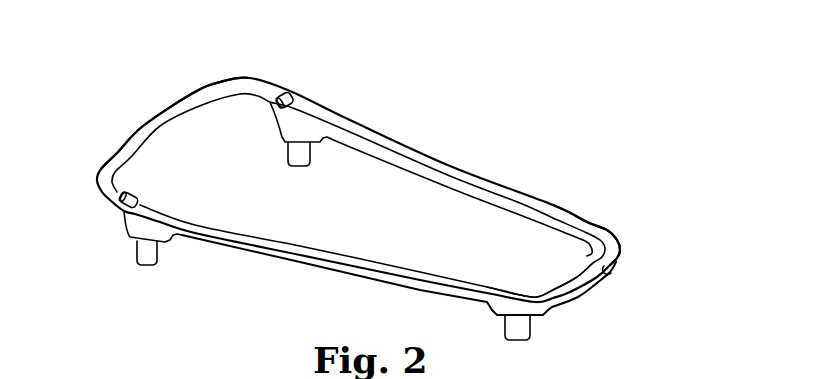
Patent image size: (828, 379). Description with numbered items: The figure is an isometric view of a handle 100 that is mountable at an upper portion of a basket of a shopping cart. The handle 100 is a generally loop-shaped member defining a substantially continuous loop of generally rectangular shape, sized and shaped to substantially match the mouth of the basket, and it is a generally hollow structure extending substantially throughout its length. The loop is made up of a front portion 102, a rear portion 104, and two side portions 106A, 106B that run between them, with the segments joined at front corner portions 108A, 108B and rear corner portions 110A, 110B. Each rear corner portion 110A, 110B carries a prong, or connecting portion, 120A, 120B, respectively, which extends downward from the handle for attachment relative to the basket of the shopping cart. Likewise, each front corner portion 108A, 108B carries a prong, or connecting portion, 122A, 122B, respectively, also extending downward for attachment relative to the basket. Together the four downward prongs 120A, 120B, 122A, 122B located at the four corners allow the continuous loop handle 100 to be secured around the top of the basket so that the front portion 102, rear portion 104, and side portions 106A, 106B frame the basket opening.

The handle 100 is at (530, 164).
The front portion 102 is at (597, 281).
The rear portion 104 is at (156, 117).
The side portion 106A is at (485, 193).
The side portion 106B is at (344, 272).
The front corner portion 108A is at (621, 241).
The front corner portion 108B is at (520, 295).
The rear corner portion 110A is at (312, 119).
The rear corner portion 110B is at (153, 220).
The prong 120A is at (288, 150).
The prong 120B is at (147, 253).
The prong 122A is at (612, 268).
The prong 122B is at (528, 330).